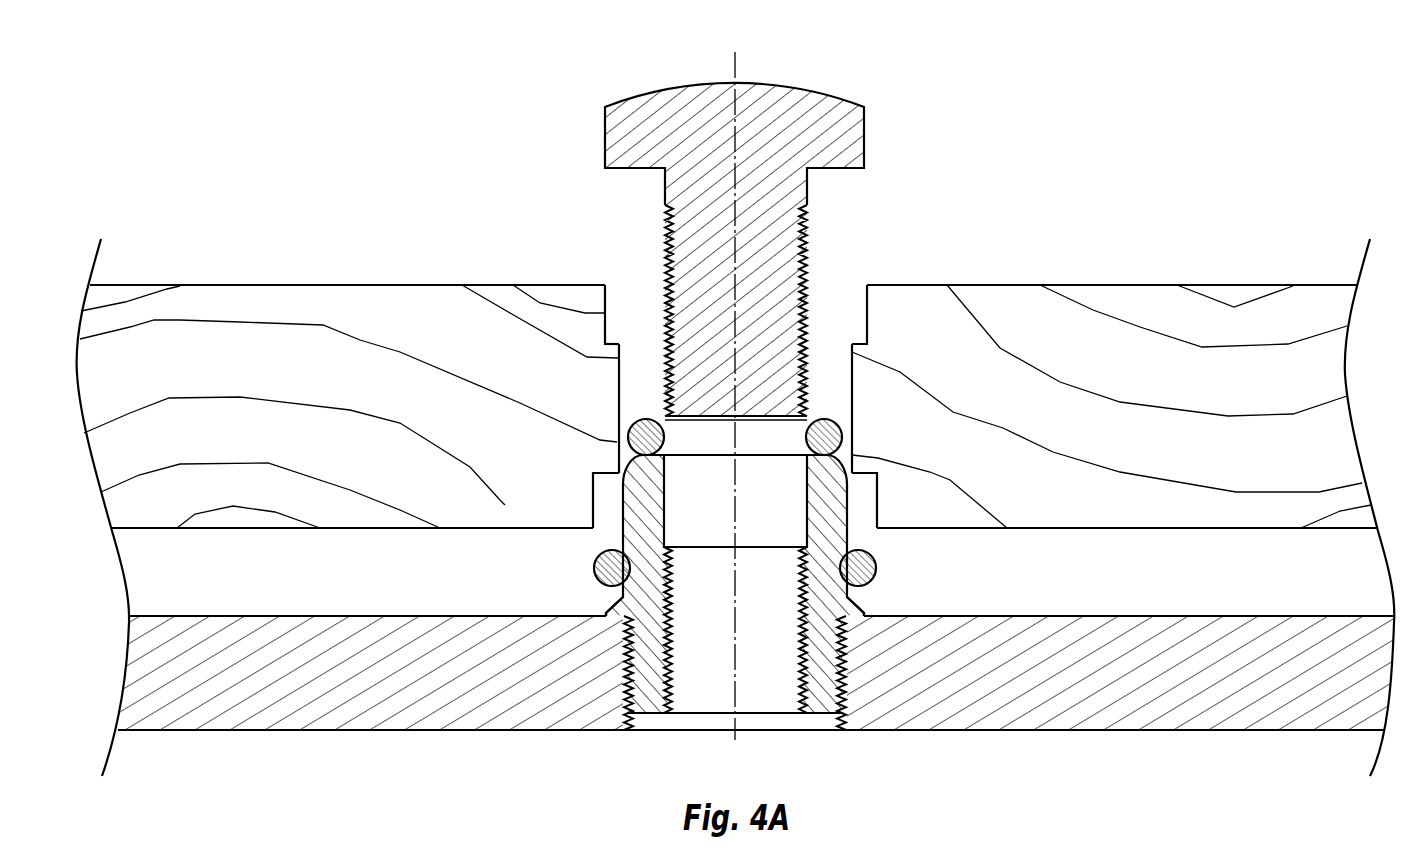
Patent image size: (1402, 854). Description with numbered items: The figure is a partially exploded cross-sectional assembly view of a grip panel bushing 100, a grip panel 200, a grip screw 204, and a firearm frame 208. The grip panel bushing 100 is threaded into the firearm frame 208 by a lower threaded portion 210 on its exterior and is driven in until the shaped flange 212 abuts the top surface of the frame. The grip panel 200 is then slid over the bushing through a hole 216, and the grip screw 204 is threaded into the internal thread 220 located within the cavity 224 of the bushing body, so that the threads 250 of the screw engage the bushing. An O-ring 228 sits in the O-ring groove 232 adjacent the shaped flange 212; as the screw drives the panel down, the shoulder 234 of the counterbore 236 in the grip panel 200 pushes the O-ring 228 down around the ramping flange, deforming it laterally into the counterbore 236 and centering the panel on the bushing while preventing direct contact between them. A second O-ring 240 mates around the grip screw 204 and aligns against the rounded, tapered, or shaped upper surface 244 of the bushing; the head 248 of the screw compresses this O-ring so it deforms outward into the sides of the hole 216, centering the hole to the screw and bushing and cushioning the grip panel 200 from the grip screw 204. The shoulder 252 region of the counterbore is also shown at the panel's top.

The grip panel bushing 100 is at (769, 597).
The grip panel 200 is at (736, 495).
The grip screw 204 is at (733, 218).
The firearm frame 208 is at (1160, 734).
The lower threaded portion 210 is at (620, 656).
The shaped flange 212 is at (871, 602).
The hole 216 is at (648, 310).
The internal thread 220 is at (796, 661).
The cavity 224 is at (712, 518).
The O-ring 228 is at (598, 572).
The O-ring groove 232 is at (848, 570).
The shoulder 234 is at (865, 480).
The counterbore 236 is at (605, 492).
The second O-ring 240 is at (823, 410).
The upper surface 244 is at (852, 467).
The head 248 is at (630, 97).
The threads 250 is at (662, 241).
The counterbore shoulder 252 is at (617, 310).